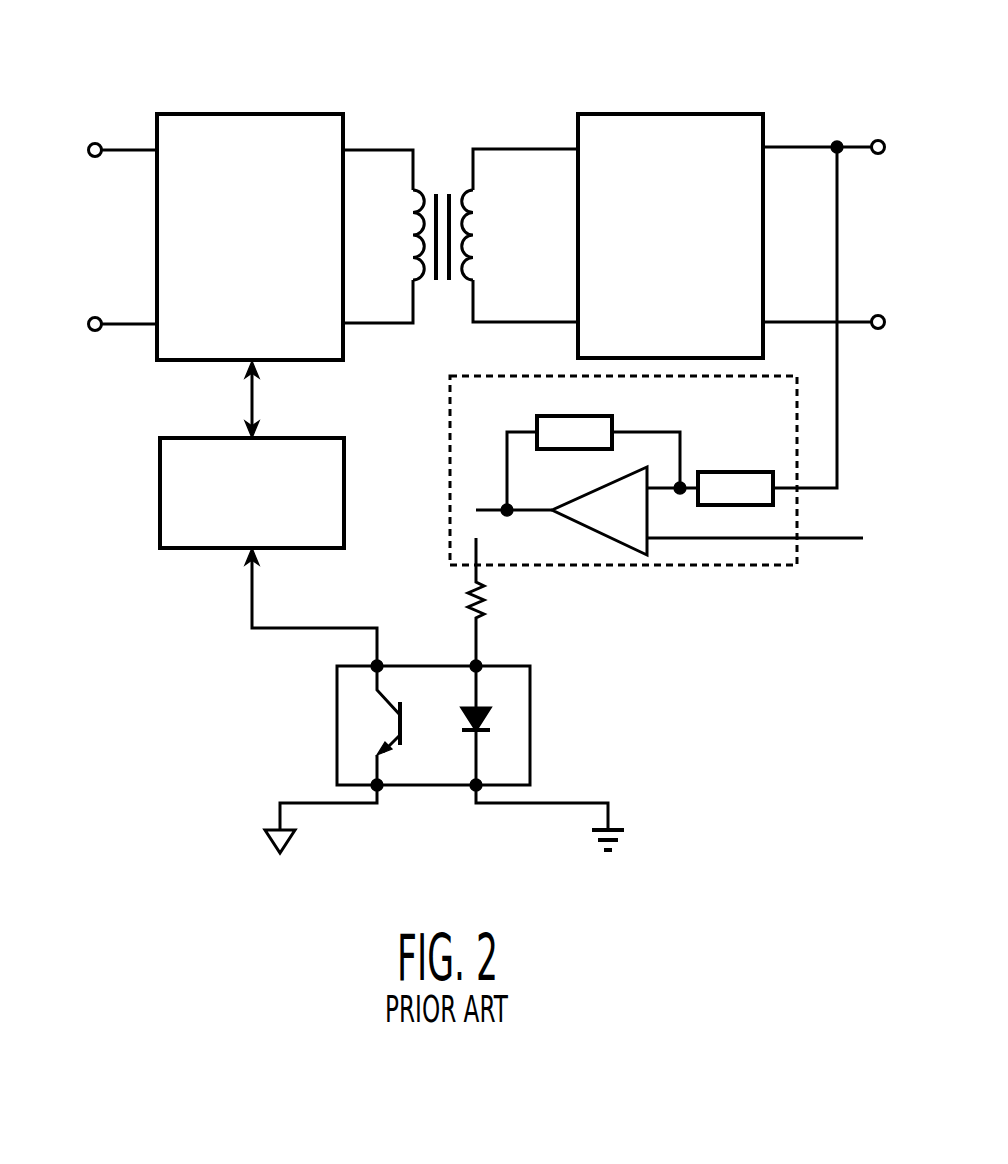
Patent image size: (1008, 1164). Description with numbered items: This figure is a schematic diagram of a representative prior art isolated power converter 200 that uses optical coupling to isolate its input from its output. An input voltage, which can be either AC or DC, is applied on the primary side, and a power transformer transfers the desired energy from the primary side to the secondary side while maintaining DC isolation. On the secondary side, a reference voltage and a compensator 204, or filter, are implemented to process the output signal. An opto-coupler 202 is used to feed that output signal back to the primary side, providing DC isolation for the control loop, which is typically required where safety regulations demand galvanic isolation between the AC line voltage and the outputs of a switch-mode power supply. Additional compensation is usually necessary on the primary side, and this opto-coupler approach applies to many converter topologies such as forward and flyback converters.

The power converter 200 is at (432, 118).
The opto-coupler 202 is at (530, 683).
The compensator 204 is at (707, 568).